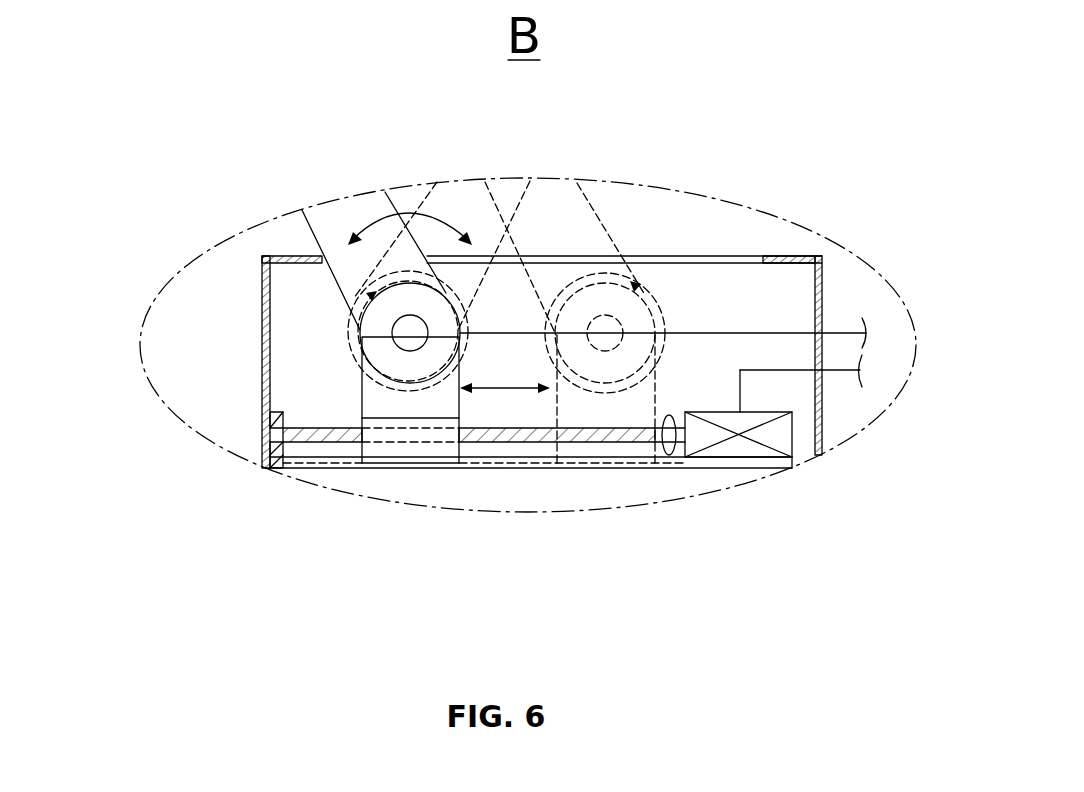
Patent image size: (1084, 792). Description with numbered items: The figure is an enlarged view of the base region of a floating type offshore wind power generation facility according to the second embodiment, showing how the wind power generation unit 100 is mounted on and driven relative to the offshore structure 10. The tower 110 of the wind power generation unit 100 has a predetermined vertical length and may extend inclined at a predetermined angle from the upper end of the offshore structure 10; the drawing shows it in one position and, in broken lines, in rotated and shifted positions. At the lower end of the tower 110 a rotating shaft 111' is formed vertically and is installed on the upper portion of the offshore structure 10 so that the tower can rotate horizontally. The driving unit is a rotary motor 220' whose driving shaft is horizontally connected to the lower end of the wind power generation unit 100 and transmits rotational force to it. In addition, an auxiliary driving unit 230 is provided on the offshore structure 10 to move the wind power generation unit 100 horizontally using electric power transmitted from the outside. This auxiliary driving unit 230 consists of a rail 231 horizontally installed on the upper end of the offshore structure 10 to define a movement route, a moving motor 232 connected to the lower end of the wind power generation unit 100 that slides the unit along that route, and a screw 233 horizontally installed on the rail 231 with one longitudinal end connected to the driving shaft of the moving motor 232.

The offshore structure 10 is at (446, 495).
The wind power generation unit 100 is at (499, 340).
The tower 110 is at (322, 233).
The rotating shaft 111' is at (438, 278).
The rotary motor 220' is at (570, 384).
The auxiliary driving unit 230 is at (539, 483).
The rail 231 is at (575, 460).
The moving motor 232 is at (746, 483).
The screw 233 is at (640, 440).